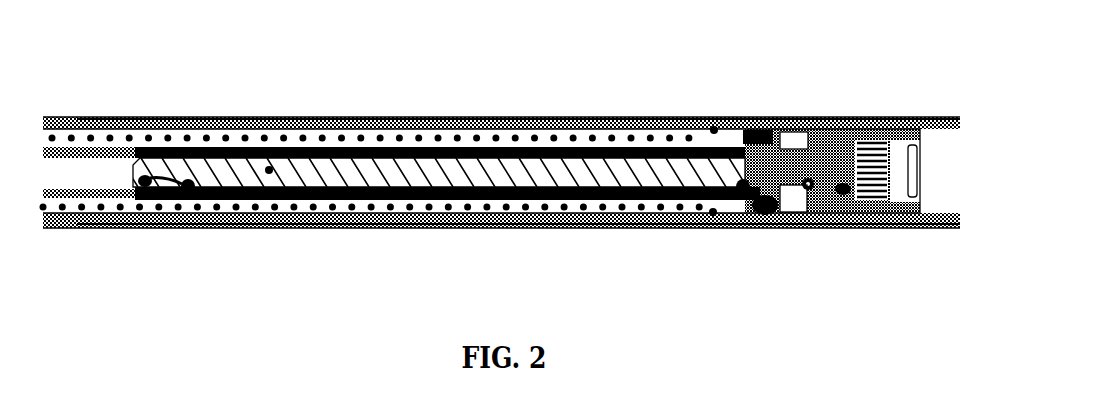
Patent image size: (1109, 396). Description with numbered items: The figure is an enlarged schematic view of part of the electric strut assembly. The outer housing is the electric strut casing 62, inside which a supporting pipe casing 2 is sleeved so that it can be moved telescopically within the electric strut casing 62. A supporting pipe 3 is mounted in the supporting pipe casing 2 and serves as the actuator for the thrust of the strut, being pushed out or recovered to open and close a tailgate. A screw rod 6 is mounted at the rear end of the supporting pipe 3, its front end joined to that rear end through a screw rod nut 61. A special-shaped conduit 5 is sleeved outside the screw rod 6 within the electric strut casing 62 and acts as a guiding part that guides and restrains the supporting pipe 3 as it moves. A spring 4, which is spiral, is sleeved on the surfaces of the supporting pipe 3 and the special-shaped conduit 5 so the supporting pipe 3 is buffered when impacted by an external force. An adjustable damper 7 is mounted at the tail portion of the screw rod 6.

The supporting pipe casing 2 is at (92, 173).
The supporting pipe 3 is at (107, 128).
The spring 4 is at (412, 208).
The special-shaped conduit 5 is at (302, 140).
The screw rod 6 is at (269, 174).
The screw rod nut 61 is at (188, 192).
The electric strut casing 62 is at (213, 127).
The adjustable damper 7 is at (758, 214).